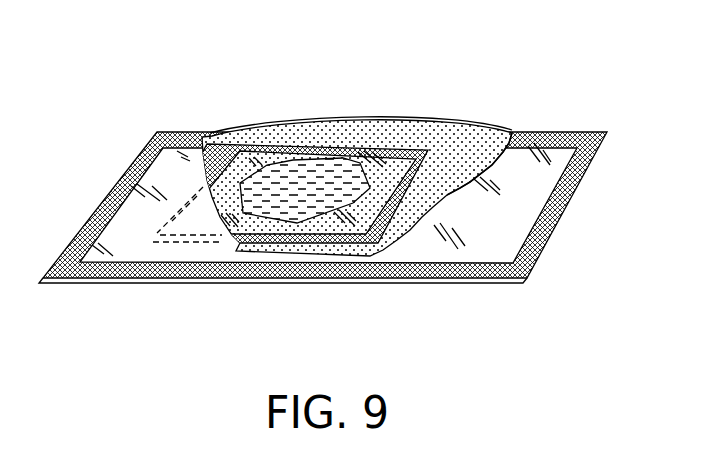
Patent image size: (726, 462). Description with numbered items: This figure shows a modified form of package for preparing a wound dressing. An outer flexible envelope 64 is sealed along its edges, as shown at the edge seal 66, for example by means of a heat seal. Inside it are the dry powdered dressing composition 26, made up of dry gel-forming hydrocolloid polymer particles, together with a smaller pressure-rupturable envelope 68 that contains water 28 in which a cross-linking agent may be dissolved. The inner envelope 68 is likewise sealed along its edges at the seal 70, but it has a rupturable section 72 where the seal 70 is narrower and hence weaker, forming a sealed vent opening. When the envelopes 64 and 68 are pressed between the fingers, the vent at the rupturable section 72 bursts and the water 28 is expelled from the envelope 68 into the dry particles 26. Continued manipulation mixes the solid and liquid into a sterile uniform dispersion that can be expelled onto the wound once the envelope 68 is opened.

The dry powdered dressing composition 26 is at (437, 128).
The water 28 is at (286, 198).
The flexible envelope 64 is at (390, 118).
The edge seal 66 is at (135, 172).
The pressure-rupturable envelope 68 is at (280, 146).
The edge seal of pressure-rupturable envelope 70 is at (202, 154).
The rupturable section 72 is at (471, 130).